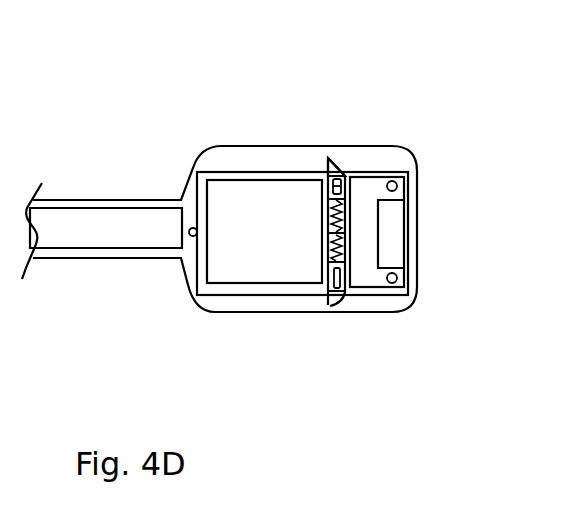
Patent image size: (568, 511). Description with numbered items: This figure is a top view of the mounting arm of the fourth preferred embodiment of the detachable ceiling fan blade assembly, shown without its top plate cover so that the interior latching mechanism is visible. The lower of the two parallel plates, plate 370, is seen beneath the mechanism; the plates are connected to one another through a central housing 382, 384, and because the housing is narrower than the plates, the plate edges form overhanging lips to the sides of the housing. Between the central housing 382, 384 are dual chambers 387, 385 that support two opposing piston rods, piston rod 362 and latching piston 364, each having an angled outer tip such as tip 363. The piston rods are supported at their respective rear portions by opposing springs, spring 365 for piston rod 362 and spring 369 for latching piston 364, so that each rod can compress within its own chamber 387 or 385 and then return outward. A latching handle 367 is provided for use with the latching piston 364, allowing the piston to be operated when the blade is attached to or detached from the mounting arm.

The plate 370 is at (259, 160).
The piston rod 362 is at (339, 177).
The upper latch tab 363 is at (346, 177).
The latching piston 364 is at (346, 302).
The spring 365 is at (331, 220).
The latching handle 367 is at (328, 306).
The spring 369 is at (337, 248).
The central housing 382 is at (375, 245).
The central housing 384 is at (280, 262).
The chamber 385 is at (337, 262).
The chamber 387 is at (336, 224).